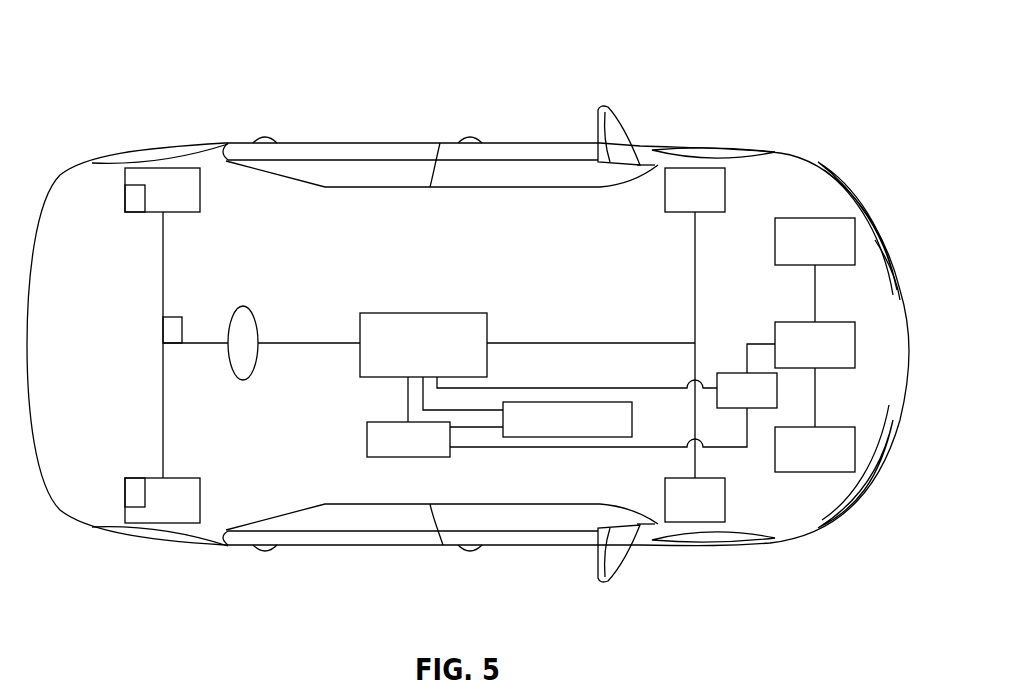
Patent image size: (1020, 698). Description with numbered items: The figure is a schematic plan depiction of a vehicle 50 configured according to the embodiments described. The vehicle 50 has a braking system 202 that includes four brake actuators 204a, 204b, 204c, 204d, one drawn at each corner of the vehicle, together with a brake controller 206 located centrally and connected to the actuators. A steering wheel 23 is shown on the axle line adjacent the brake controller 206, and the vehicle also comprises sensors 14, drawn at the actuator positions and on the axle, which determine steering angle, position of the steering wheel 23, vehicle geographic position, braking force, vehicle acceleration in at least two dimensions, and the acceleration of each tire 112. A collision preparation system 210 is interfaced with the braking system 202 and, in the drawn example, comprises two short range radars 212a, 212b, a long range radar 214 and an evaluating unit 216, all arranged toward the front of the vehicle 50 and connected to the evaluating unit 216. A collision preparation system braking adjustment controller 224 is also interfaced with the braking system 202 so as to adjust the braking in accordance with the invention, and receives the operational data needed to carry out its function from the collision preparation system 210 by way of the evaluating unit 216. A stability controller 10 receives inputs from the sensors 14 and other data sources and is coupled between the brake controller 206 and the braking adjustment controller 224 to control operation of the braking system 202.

The vehicle 50 is at (148, 38).
The tire 112 is at (155, 150).
The sensors 14 is at (124, 198).
The brake actuator 204a is at (664, 498).
The brake actuator 204b is at (664, 188).
The brake actuator 204c is at (201, 190).
The brake actuator 204d is at (201, 503).
The braking system 202 is at (383, 303).
The brake controller 206 is at (359, 330).
The steering wheel 23 is at (243, 382).
The collision preparation system braking adjustment controller 224 is at (366, 445).
The stability controller 10 is at (633, 422).
The collision preparation system 210 is at (797, 360).
The short range radar 212a is at (825, 473).
The short range radar 212b is at (825, 217).
The long range radar 214 is at (797, 321).
The evaluating unit 216 is at (740, 372).